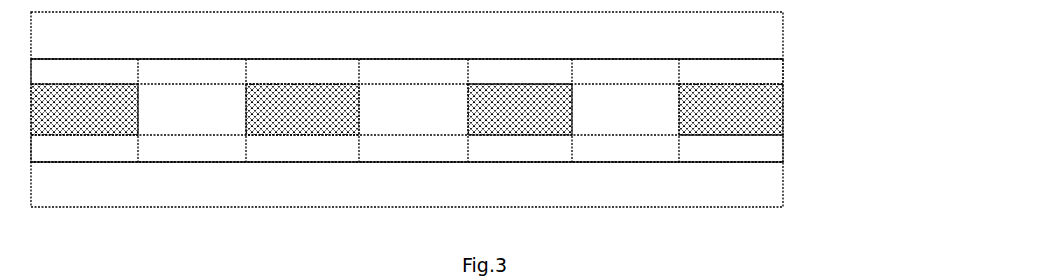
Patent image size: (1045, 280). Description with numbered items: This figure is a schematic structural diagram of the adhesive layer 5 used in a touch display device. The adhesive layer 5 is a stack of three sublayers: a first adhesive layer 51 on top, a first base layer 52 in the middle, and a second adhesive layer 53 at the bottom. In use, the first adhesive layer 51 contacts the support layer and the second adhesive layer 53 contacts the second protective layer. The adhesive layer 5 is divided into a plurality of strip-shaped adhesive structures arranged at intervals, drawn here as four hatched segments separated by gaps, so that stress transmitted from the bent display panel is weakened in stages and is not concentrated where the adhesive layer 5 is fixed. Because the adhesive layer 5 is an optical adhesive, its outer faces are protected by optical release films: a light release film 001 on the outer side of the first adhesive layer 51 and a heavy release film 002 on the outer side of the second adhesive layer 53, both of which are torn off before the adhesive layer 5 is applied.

The light release film 001 is at (712, 35).
The heavy release film 002 is at (712, 183).
The adhesive layer 5 is at (489, 110).
The first adhesive layer 51 is at (795, 71).
The first base layer 52 is at (795, 111).
The second adhesive layer 53 is at (795, 148).